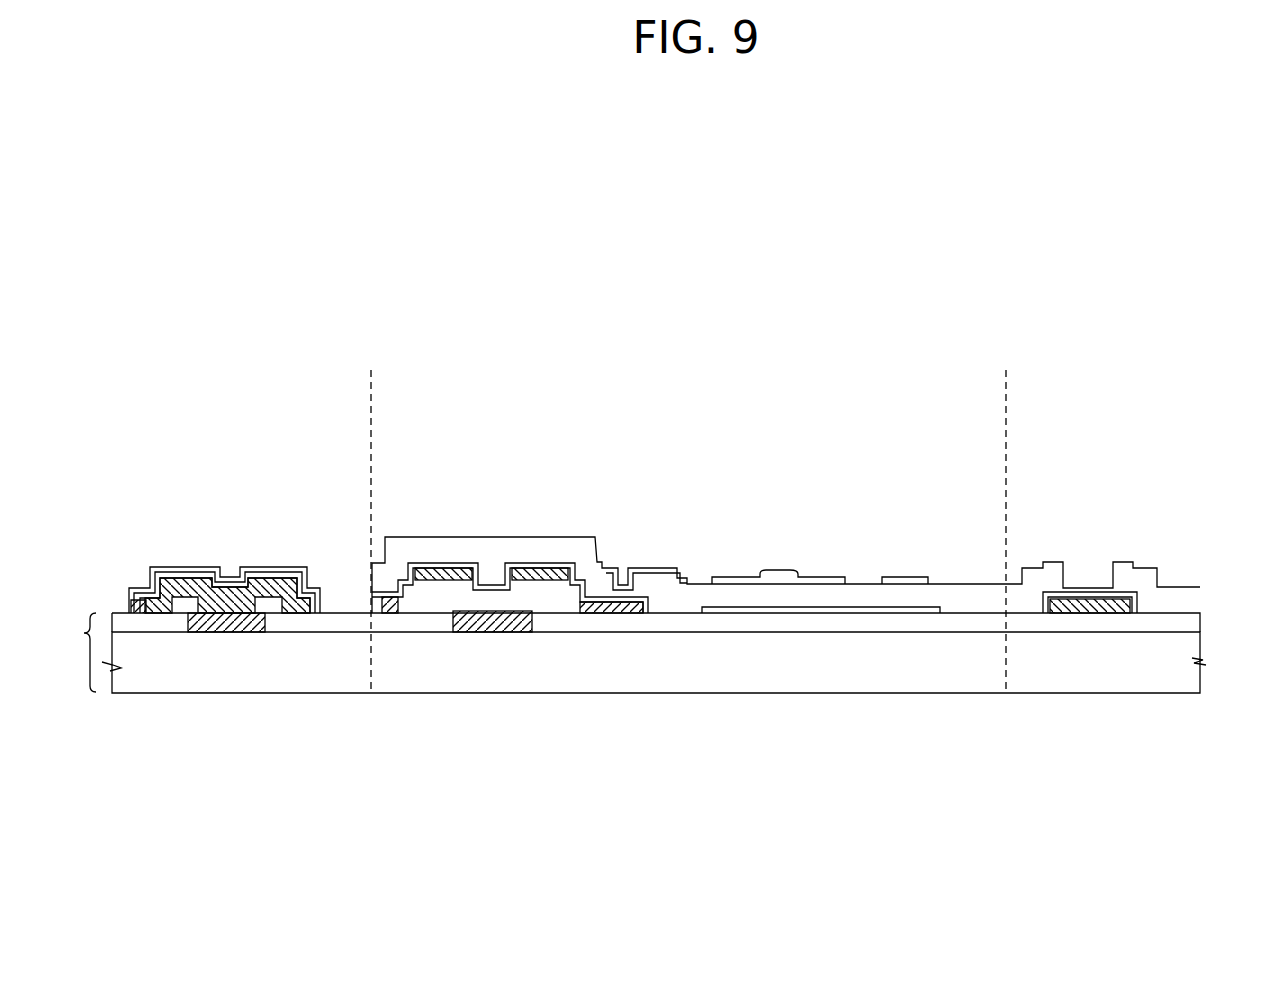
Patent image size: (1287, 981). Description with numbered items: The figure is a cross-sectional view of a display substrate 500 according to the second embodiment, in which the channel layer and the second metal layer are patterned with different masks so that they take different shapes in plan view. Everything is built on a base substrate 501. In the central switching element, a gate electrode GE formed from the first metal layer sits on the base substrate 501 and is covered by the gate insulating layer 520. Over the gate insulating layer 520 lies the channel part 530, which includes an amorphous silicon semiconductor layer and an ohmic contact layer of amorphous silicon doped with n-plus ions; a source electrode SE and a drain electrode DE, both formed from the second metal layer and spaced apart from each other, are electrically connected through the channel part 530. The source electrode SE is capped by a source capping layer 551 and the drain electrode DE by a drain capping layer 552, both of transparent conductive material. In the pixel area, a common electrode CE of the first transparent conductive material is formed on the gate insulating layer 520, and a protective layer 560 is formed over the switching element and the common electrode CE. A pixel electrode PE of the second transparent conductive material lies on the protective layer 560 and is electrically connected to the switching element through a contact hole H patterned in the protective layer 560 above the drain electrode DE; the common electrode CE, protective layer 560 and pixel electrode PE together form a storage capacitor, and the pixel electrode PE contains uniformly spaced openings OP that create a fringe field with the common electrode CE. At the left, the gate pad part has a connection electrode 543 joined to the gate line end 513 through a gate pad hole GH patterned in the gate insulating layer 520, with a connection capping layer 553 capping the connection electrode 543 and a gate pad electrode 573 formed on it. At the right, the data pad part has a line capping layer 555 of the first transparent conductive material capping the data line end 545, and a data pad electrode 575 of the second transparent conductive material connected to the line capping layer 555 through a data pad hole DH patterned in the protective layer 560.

The display substrate 500 is at (70, 652).
The base substrate 501 is at (1200, 649).
The gate insulating layer 520 is at (1200, 619).
The protective layer 560 is at (1200, 591).
The connection capping layer 553 is at (138, 603).
The gate pad electrode 573 is at (152, 604).
The end 513 is at (232, 616).
The connection electrode 543 is at (250, 618).
The source capping layer 551 is at (382, 600).
The source electrode SE is at (400, 584).
The gate electrode GE is at (480, 614).
The drain electrode DE is at (522, 582).
The drain capping layer 552 is at (537, 565).
The channel part 530 is at (563, 572).
The common electrode CE is at (822, 612).
The pixel electrode PE is at (905, 585).
The data pad electrode 575 is at (1073, 590).
The end 545 is at (1087, 608).
The line capping layer 555 is at (1113, 598).
The gate pad hole GH is at (225, 576).
The contact hole H is at (623, 573).
The opening OP is at (778, 570).
The data pad hole DH is at (1097, 577).